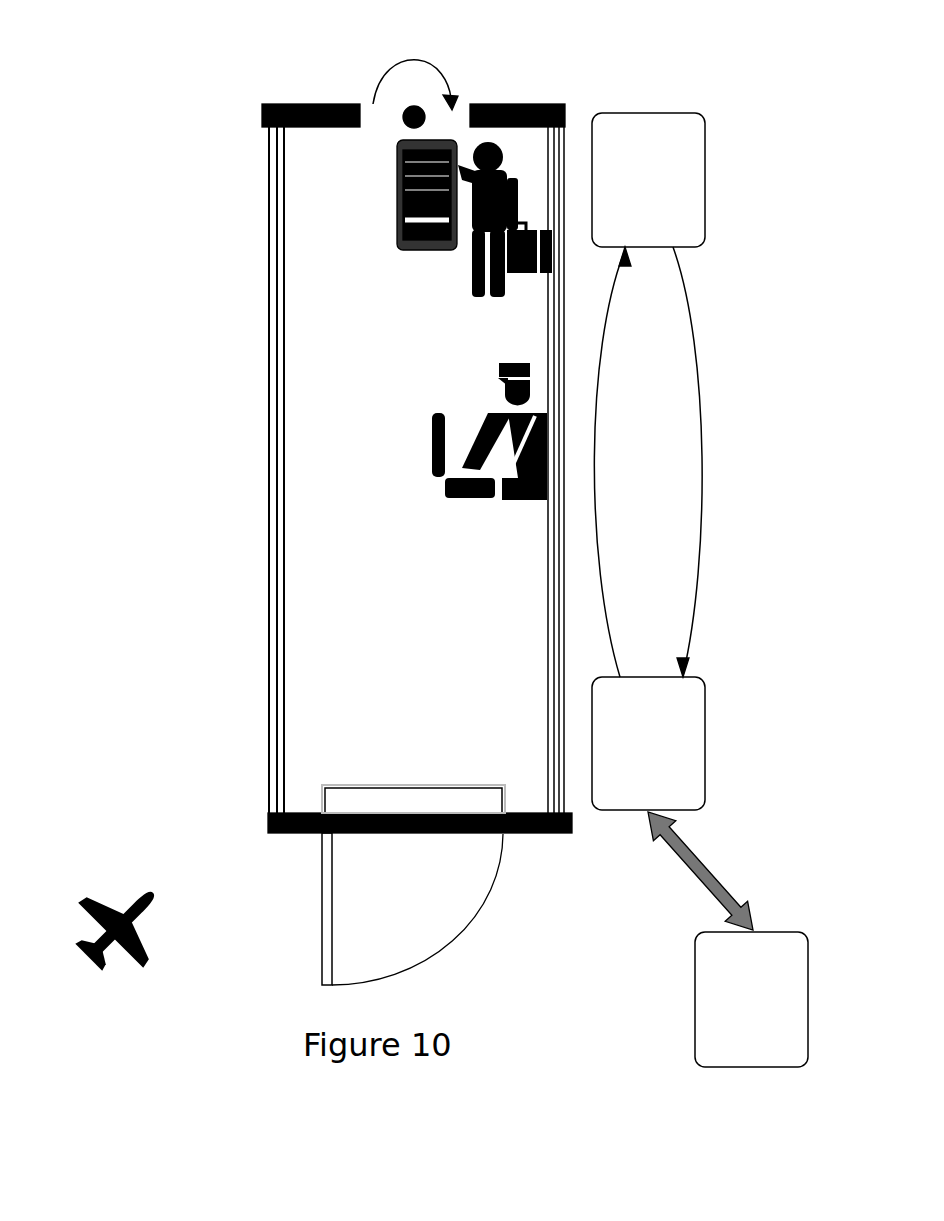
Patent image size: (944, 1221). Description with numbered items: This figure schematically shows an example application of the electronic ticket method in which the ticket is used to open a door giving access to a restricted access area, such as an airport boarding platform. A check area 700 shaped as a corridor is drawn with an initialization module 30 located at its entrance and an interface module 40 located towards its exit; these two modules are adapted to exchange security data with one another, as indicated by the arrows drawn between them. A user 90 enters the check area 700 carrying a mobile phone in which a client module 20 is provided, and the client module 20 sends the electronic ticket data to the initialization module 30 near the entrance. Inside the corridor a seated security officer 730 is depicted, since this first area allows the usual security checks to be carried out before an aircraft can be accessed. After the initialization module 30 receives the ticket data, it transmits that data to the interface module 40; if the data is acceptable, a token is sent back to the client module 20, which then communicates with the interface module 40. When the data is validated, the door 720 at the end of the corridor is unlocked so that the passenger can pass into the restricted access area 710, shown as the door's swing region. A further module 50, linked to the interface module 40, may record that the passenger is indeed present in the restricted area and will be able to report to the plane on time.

The client module 20 is at (397, 185).
The initialization module 30 is at (685, 160).
The interface module 40 is at (665, 710).
The module 50 is at (765, 1013).
The user 90 is at (500, 172).
The check area 700 is at (323, 446).
The restricted access area 710 is at (418, 897).
The door 720 is at (325, 893).
The security officer 730 is at (545, 455).